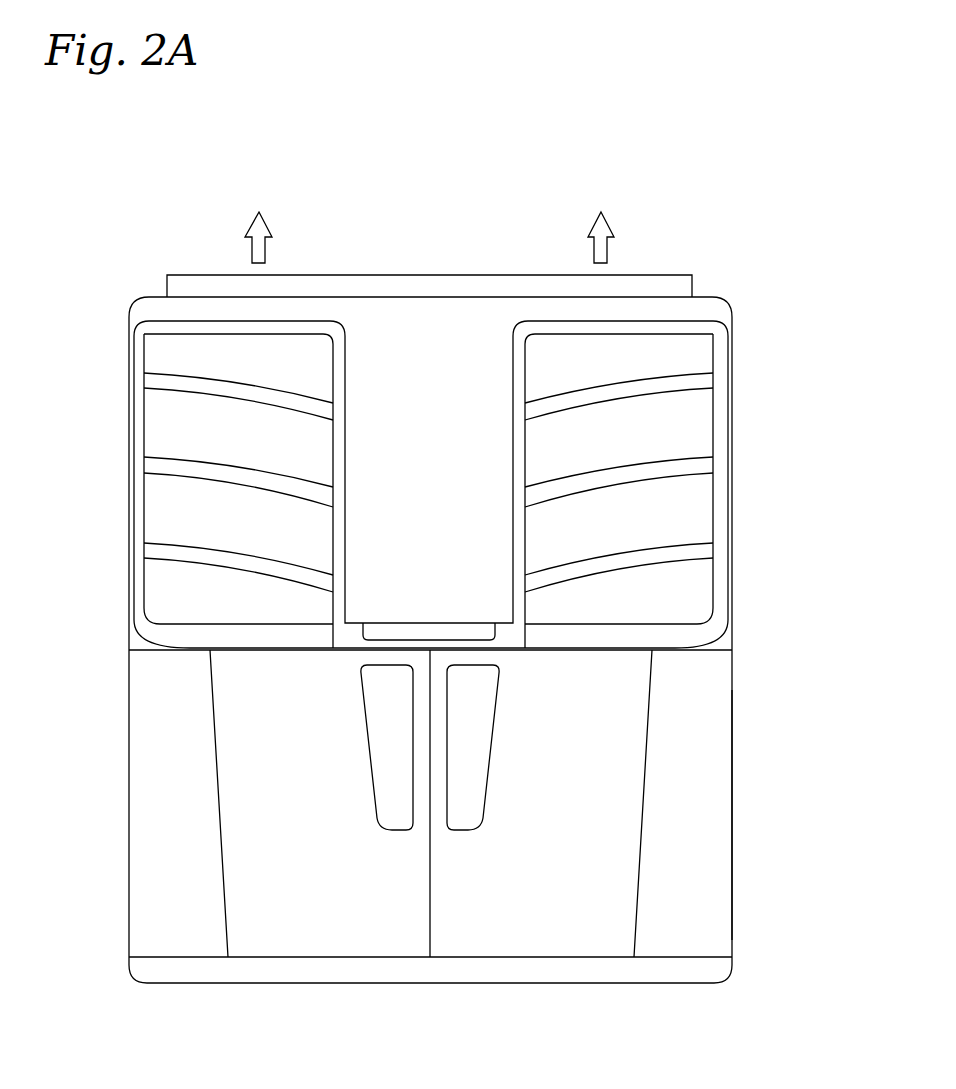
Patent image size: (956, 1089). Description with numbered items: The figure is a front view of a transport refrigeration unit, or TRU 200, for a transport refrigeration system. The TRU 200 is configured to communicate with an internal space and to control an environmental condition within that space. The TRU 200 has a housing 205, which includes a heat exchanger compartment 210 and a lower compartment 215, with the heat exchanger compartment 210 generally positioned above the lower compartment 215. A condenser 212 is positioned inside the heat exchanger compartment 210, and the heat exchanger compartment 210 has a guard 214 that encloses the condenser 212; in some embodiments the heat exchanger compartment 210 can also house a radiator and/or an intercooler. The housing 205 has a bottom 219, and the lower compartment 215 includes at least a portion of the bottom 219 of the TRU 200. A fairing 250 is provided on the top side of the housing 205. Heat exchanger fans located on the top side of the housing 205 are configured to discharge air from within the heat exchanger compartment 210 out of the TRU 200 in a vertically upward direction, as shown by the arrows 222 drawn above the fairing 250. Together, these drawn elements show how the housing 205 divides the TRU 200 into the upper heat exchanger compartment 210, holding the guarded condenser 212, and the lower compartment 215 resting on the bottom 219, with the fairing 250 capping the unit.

The transport refrigeration unit 200 is at (461, 200).
The housing 205 is at (732, 725).
The heat exchanger compartment 210 is at (733, 445).
The condenser 212 is at (175, 432).
The guard 214 is at (682, 382).
The lower compartment 215 is at (732, 820).
The bottom 219 is at (570, 984).
The arrows 222 is at (255, 215).
The fairing 250 is at (473, 275).